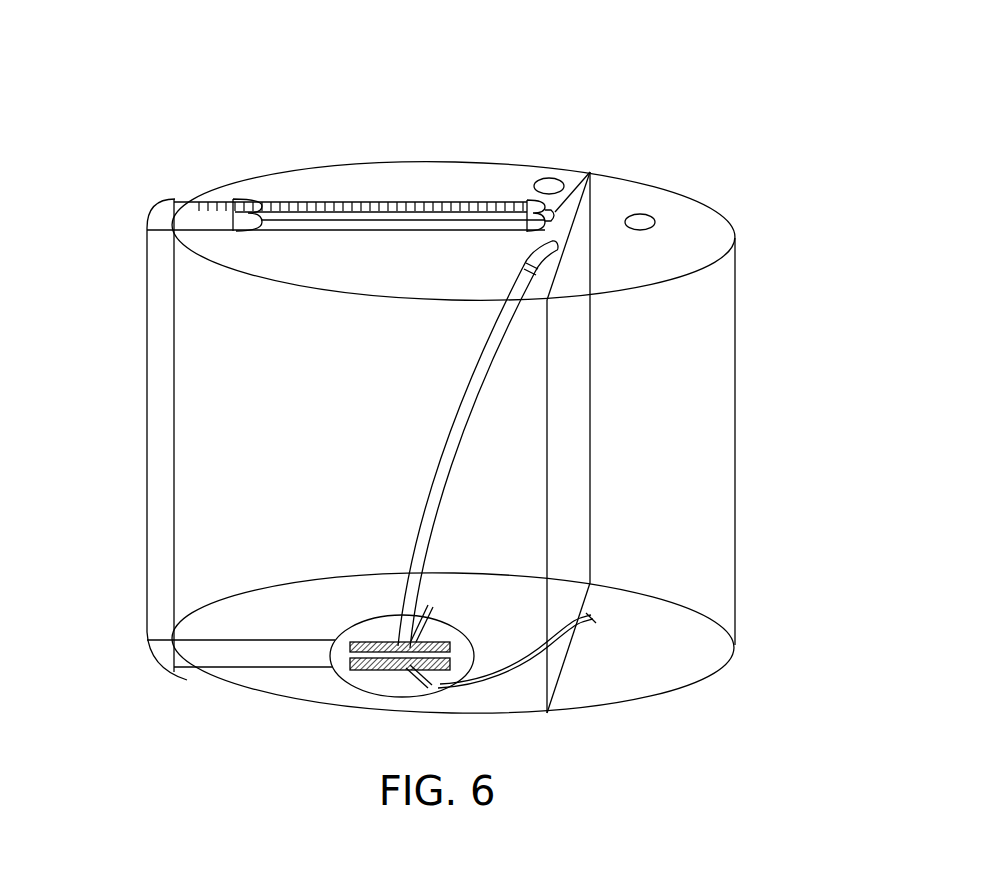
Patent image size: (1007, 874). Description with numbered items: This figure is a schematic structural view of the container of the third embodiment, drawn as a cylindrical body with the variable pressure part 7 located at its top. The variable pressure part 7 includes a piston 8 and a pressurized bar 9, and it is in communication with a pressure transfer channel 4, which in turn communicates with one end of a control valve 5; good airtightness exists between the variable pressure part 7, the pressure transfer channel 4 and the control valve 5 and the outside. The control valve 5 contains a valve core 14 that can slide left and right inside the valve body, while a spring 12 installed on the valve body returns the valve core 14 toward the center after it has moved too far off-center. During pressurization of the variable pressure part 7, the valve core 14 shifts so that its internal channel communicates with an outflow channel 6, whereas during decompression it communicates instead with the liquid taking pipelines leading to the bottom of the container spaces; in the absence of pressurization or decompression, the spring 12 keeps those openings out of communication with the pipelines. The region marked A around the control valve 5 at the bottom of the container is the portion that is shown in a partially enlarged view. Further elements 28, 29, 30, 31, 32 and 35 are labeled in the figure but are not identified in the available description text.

The pressure transfer channel 4 is at (200, 653).
The control valve 5 is at (372, 668).
The outflow channel 6 is at (423, 545).
The variable pressure part 7 is at (310, 223).
The piston 8 is at (237, 203).
The pressurized bar 9 is at (590, 172).
The spring 12 is at (555, 181).
The valve core 14 is at (432, 607).
The outer wall 28 is at (172, 435).
The right wall 29 is at (745, 455).
The inner wall 30 is at (213, 358).
The top rim 31 is at (697, 370).
The hatched rod 32 is at (340, 202).
The cable 35 is at (590, 620).
The partially enlarged region A is at (363, 623).